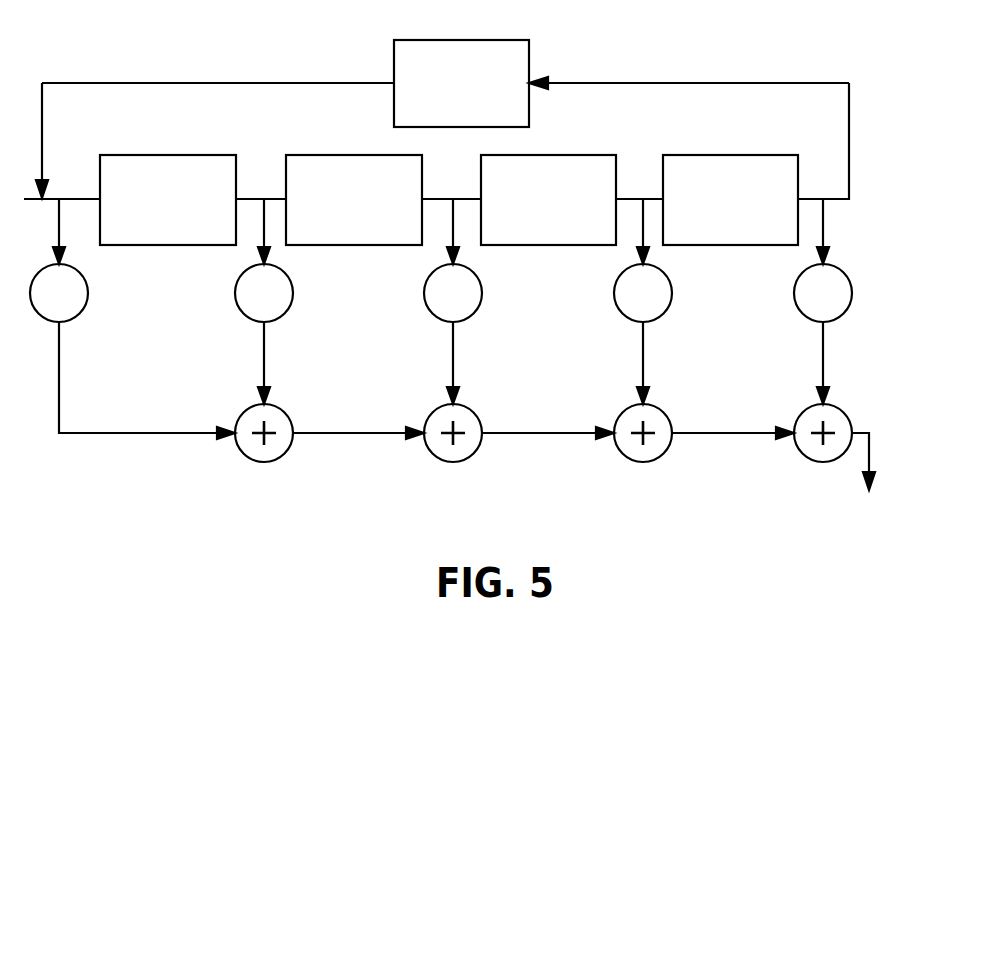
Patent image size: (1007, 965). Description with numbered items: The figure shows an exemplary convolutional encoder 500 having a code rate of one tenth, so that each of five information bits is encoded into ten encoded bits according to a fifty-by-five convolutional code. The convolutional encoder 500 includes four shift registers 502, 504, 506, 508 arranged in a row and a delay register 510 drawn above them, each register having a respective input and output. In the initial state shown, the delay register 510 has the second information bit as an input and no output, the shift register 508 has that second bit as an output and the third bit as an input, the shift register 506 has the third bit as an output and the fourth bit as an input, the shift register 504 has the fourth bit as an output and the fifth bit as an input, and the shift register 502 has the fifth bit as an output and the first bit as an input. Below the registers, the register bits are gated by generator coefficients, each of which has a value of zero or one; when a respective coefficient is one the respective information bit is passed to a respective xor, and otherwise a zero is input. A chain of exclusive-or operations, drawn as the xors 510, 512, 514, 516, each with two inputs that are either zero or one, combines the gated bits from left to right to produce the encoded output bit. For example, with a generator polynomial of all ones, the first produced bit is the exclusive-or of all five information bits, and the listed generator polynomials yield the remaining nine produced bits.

The convolutional encoder 500 is at (118, 31).
The shift register 502 is at (168, 200).
The shift register 504 is at (354, 200).
The shift register 506 is at (548, 200).
The shift register 508 is at (730, 200).
The delay register 510 is at (238, 479).
The xor 512 is at (452, 461).
The xor 514 is at (641, 461).
The xor 516 is at (822, 461).